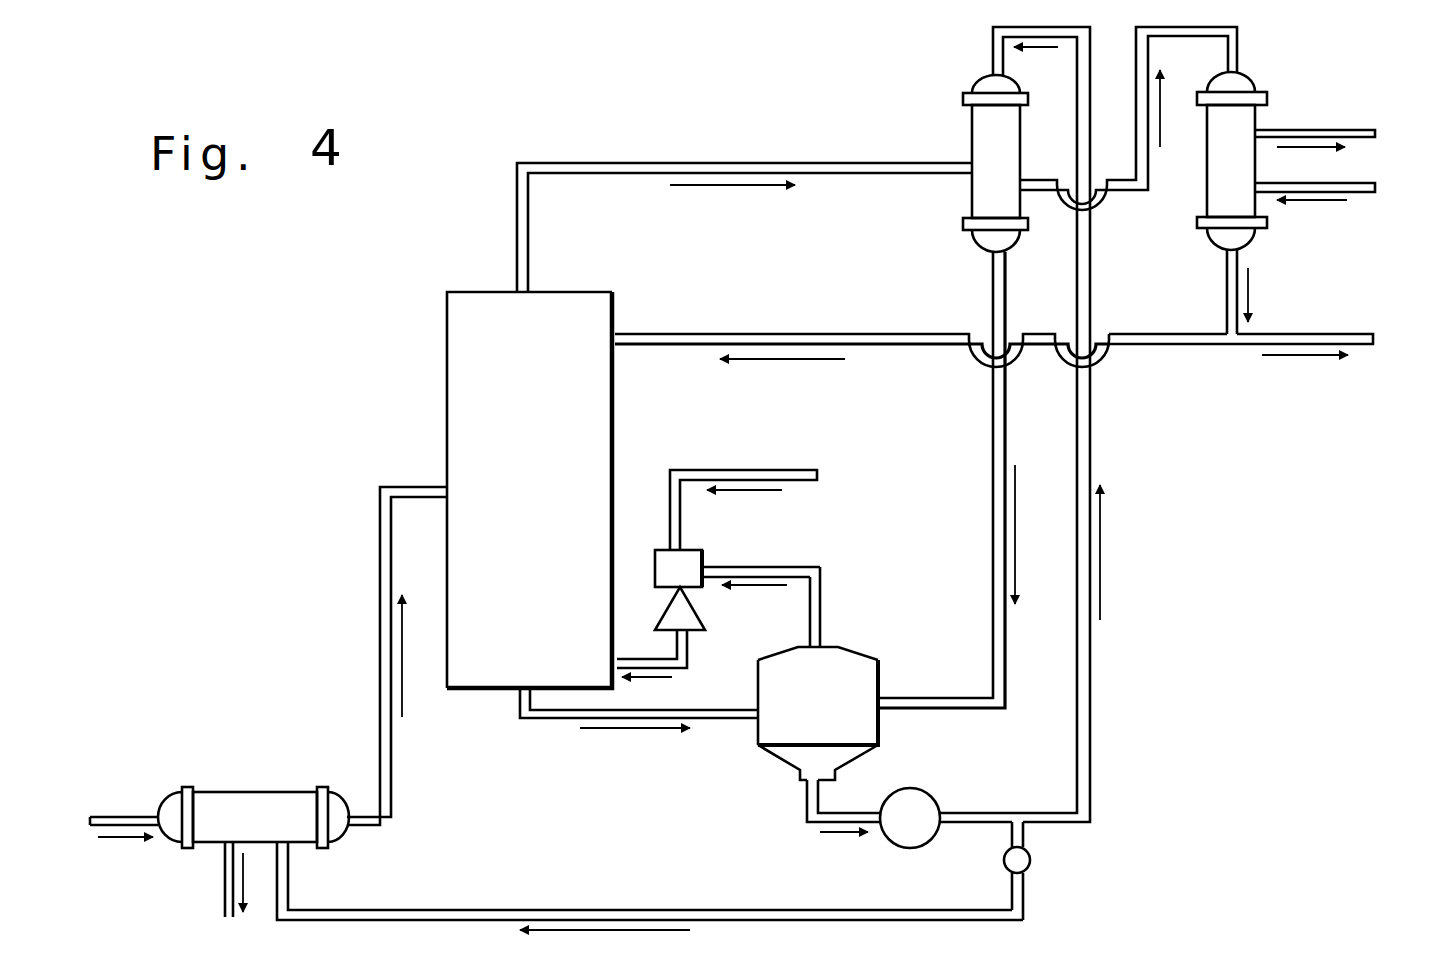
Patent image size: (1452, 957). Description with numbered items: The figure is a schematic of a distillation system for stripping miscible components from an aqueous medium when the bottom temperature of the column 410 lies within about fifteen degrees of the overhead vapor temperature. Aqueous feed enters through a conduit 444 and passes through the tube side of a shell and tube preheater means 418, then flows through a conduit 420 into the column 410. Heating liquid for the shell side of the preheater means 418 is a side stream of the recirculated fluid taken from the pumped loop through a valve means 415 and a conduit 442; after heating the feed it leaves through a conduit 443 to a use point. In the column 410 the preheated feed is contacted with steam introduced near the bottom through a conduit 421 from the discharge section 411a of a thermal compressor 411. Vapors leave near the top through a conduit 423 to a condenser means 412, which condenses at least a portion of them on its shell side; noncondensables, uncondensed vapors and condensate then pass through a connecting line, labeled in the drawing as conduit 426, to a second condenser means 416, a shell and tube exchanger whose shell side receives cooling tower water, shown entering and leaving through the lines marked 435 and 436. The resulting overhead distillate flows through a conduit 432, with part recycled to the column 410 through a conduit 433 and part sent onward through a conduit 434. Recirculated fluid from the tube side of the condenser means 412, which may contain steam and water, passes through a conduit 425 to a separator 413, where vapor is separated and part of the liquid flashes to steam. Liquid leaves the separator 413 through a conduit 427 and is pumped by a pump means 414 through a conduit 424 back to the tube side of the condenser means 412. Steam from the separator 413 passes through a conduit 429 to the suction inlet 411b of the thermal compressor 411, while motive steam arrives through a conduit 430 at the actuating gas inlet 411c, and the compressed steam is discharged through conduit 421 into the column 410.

The column 410 is at (470, 375).
The thermal compressor 411 is at (726, 534).
The discharge section 411a is at (695, 636).
The suction inlet 411b is at (705, 567).
The actuating gas inlet 411c is at (685, 550).
The condenser means 412 is at (985, 122).
The separator 413 is at (858, 723).
The pump means 414 is at (890, 842).
The valve means 415 is at (1031, 860).
The second condenser means 416 is at (1222, 187).
The preheater means 418 is at (243, 812).
The conduit 420 is at (380, 544).
The conduit 421 is at (680, 670).
The conduit 423 is at (643, 163).
The conduit 424 is at (993, 30).
The conduit 425 is at (995, 440).
The vapor line 426 is at (1237, 40).
The conduit 427 is at (805, 800).
The conduit 429 is at (822, 612).
The conduit 430 is at (740, 470).
The conduit 432 is at (1227, 282).
The conduit 433 is at (815, 334).
The conduit 434 is at (1288, 334).
The cooling water inlet 435 is at (1375, 192).
The cooling water outlet 436 is at (1375, 137).
The conduit 442 is at (548, 905).
The conduit 443 is at (225, 875).
The conduit 444 is at (113, 812).